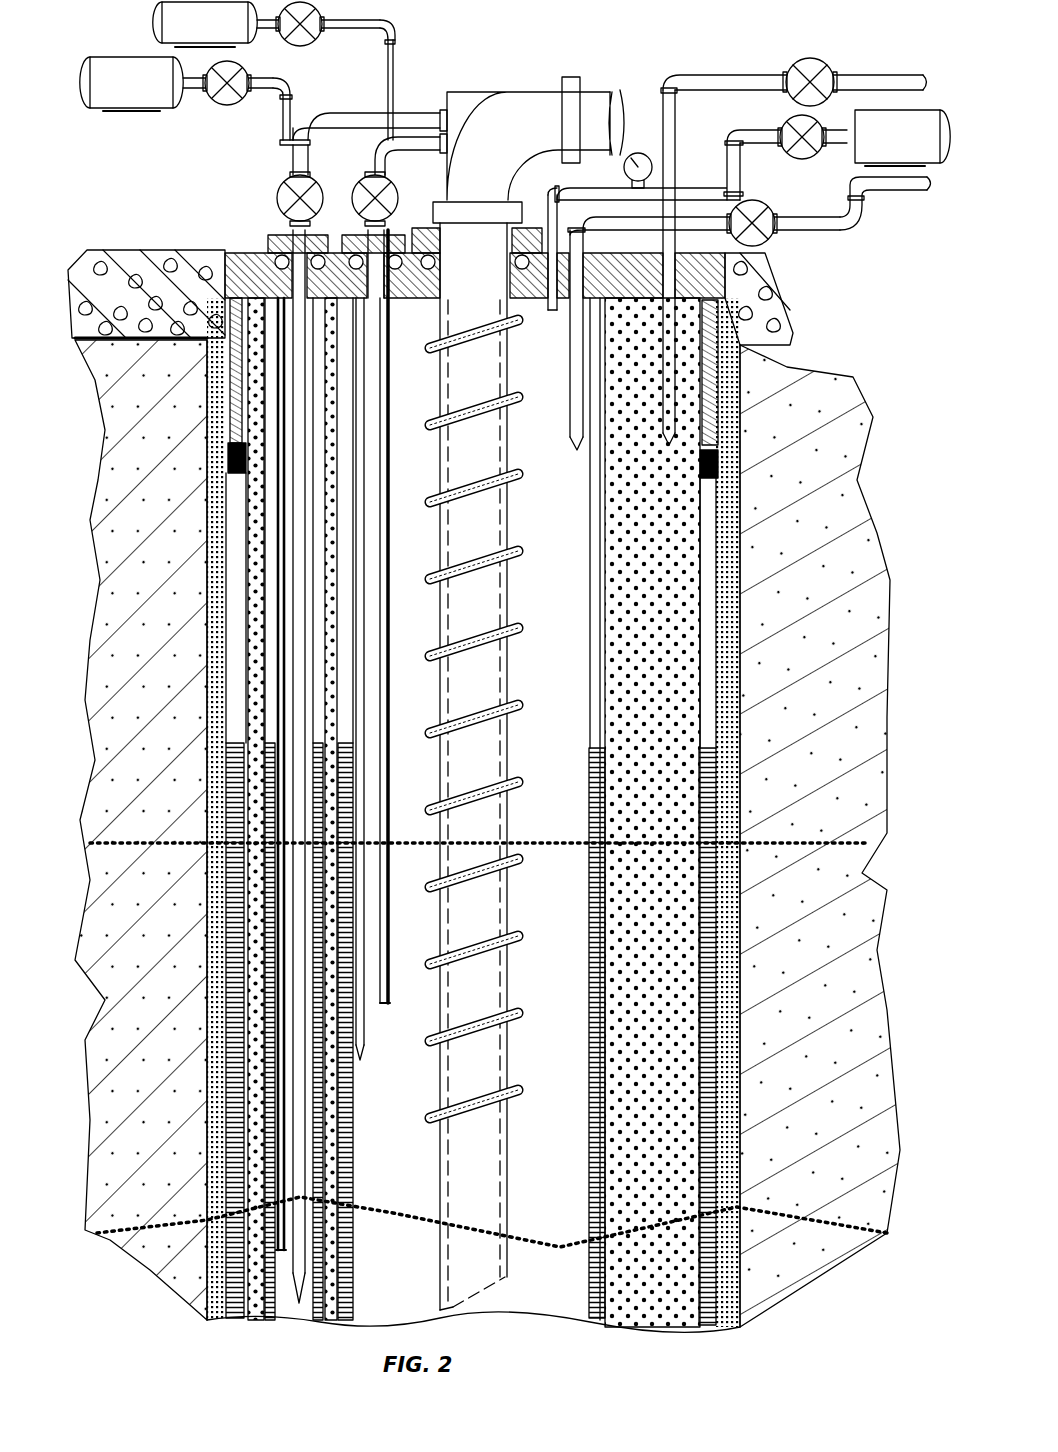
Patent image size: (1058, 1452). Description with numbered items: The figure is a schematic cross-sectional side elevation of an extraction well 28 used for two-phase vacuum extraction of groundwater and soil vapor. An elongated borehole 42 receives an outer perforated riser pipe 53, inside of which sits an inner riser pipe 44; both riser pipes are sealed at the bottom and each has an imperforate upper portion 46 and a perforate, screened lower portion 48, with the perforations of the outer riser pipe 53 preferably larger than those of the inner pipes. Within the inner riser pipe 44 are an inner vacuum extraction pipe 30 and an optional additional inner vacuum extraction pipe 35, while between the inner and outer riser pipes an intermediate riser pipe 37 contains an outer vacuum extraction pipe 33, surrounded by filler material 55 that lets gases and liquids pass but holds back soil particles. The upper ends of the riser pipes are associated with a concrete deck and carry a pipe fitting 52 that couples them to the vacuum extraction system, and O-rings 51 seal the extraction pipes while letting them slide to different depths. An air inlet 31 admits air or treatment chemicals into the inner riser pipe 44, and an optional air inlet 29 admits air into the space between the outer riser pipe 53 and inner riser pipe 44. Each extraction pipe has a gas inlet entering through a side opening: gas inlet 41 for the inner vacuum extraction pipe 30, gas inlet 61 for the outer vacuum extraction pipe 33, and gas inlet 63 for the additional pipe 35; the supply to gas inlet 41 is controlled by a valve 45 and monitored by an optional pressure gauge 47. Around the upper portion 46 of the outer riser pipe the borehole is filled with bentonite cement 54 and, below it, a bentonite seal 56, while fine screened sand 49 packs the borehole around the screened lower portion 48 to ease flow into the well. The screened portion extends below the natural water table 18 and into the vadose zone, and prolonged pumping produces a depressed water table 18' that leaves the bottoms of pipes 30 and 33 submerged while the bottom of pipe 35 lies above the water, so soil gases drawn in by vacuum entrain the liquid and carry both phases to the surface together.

The natural water table 18 is at (509, 829).
The depressed water table 18' is at (494, 1257).
The extraction well 28 is at (136, 238).
The air inlet 29 is at (667, 405).
The inner vacuum extraction pipe 30 is at (490, 600).
The air inlet 31 is at (573, 388).
The outer vacuum extraction pipe 33 is at (295, 798).
The additional inner vacuum extraction pipe 35 is at (375, 625).
The intermediate riser pipe 37 is at (268, 613).
The gas inlet 41 is at (500, 1105).
The borehole 42 is at (730, 1300).
The inner riser pipe 44 is at (583, 1272).
The valve 45 is at (805, 150).
The imperforate upper portion 46 is at (597, 610).
The pressure gauge 47 is at (638, 175).
The screened lower portion 48 is at (698, 1025).
The fine screened sand 49 is at (735, 1130).
The O-rings 51 is at (268, 244).
The pipe fitting 52 is at (530, 100).
The outer perforated riser pipe 53 is at (710, 1305).
The bentonite cement 54 is at (710, 385).
The filler material 55 is at (660, 1085).
The bentonite seal 56 is at (700, 470).
The gas inlet 61 is at (280, 1155).
The gas inlet 63 is at (388, 940).